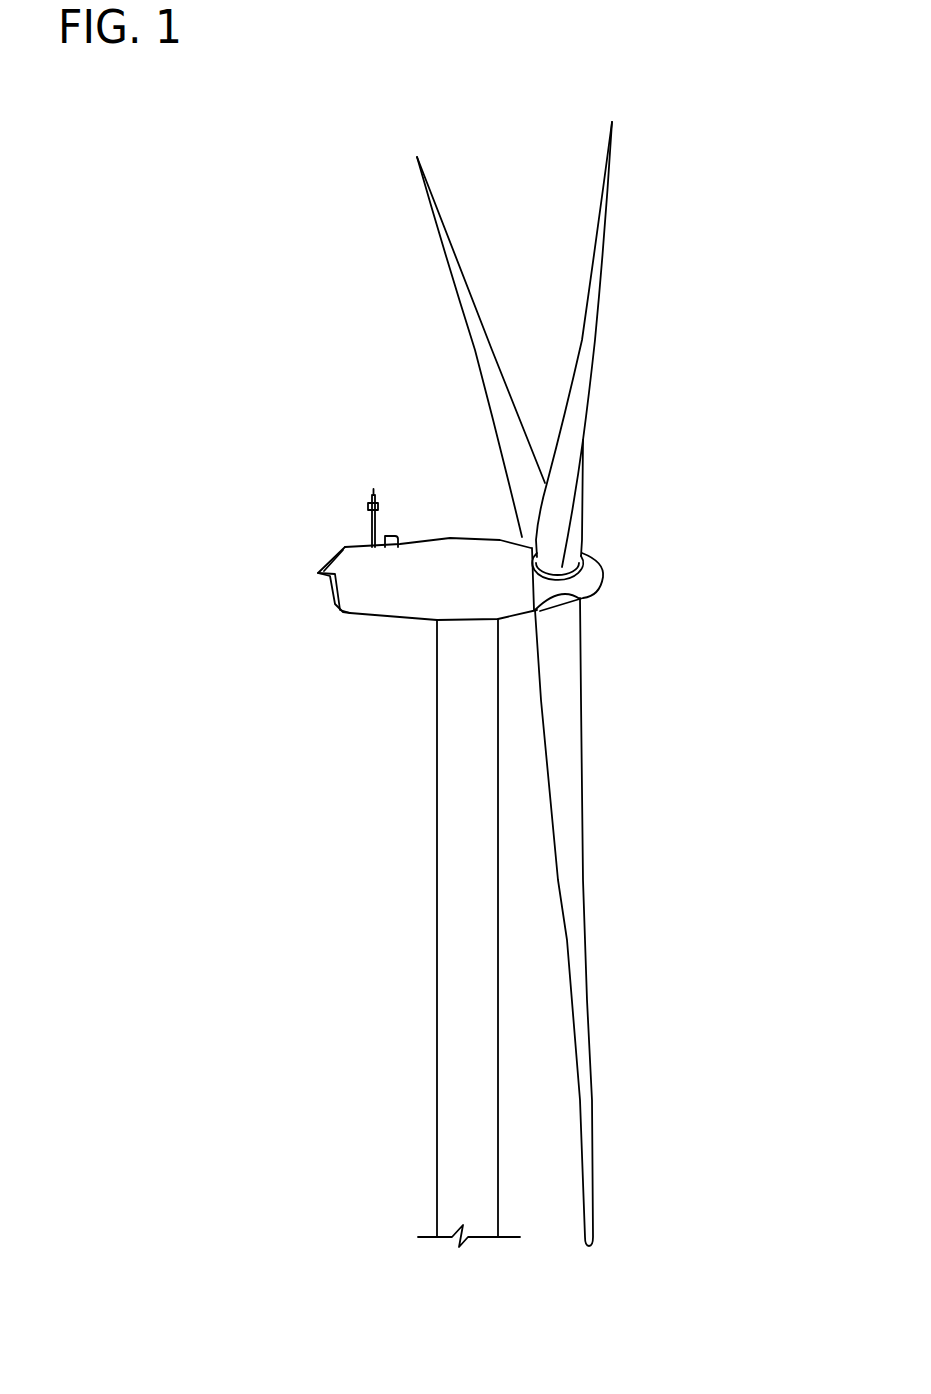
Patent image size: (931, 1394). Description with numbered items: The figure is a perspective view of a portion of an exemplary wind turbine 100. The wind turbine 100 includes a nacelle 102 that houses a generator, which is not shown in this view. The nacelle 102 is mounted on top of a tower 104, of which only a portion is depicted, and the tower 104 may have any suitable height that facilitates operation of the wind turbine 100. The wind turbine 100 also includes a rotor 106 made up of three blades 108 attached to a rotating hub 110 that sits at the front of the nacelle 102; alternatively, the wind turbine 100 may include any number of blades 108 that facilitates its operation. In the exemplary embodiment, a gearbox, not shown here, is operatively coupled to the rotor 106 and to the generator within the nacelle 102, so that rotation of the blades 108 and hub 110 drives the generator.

The wind turbine 100 is at (310, 202).
The nacelle 102 is at (372, 616).
The tower 104 is at (437, 882).
The rotor 106 is at (652, 327).
The blades 108 is at (452, 237).
The rotating hub 110 is at (597, 592).